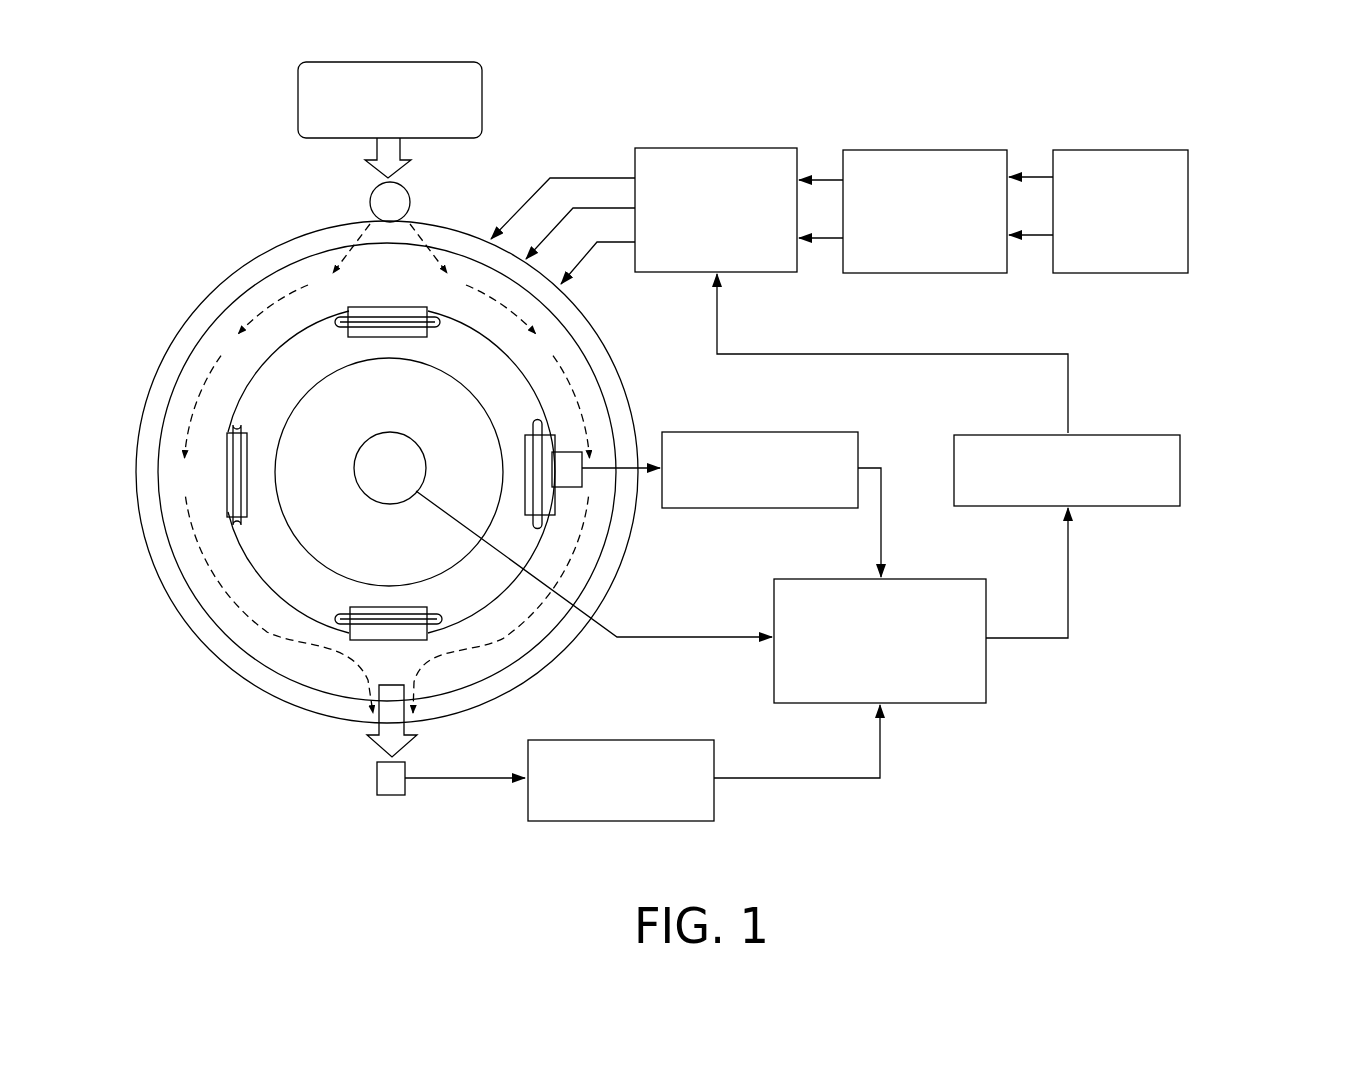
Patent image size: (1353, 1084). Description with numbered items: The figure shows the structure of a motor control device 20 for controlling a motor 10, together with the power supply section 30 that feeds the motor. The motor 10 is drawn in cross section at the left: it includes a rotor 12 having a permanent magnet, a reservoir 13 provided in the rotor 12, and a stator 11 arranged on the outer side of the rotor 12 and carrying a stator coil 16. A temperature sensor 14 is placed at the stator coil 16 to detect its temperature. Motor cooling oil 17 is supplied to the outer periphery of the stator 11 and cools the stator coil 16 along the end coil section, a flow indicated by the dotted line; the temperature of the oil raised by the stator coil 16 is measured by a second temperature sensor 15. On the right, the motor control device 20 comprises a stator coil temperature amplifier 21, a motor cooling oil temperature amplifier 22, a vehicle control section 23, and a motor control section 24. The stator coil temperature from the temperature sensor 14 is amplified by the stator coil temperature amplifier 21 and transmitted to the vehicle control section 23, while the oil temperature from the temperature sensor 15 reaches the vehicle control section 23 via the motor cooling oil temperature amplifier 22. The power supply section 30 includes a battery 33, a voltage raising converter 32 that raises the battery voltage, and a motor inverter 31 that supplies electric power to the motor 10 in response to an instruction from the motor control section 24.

The motor 10 is at (214, 251).
The stator 11 is at (183, 352).
The rotor 12 is at (297, 543).
The reservoir 13 is at (367, 500).
The temperature sensor 14 is at (580, 452).
The temperature sensor 15 is at (377, 770).
The stator coil 16 is at (226, 474).
The motor cooling oil 17 is at (482, 95).
The motor control device 20 is at (1032, 762).
The stator coil temperature amplifier 21 is at (730, 508).
The motor cooling oil temperature amplifier 22 is at (618, 821).
The vehicle control section 23 is at (938, 703).
The motor control section 24 is at (1120, 506).
The power supply section 30 is at (962, 210).
The motor inverter 31 is at (710, 148).
The voltage raising converter 32 is at (923, 150).
The battery 33 is at (1123, 150).